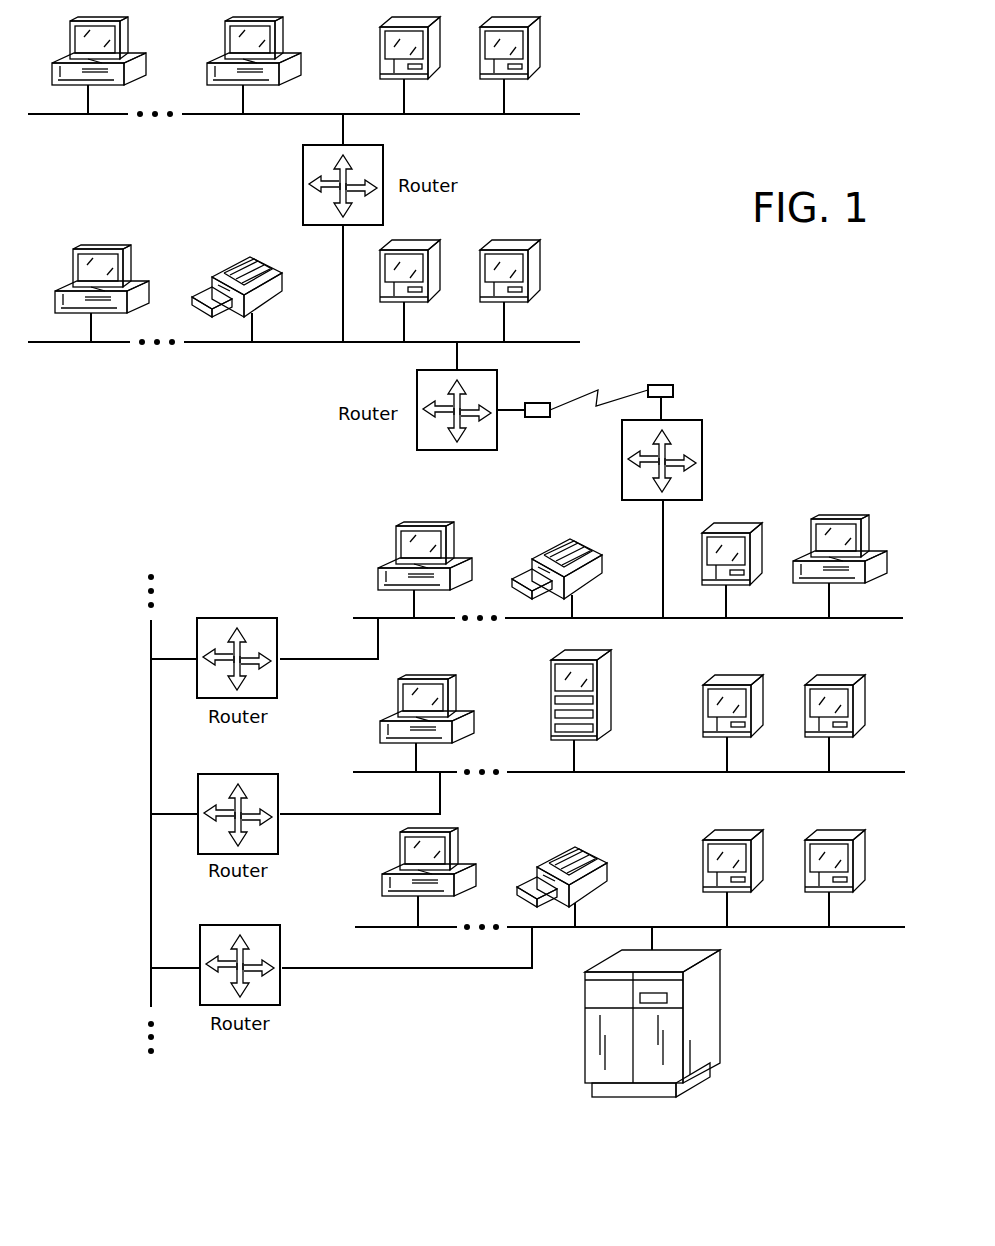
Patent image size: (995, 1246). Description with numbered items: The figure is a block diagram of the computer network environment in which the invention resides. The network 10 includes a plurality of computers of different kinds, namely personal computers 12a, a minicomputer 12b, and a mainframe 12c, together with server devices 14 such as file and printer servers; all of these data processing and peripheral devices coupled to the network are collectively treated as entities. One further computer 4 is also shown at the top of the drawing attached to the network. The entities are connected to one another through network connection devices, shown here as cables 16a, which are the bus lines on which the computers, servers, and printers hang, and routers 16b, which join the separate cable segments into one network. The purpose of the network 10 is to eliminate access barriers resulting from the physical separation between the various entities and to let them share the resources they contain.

The client computer 4 is at (62, 60).
The network 10 is at (82, 797).
The personal computer 12a is at (380, 33).
The minicomputer 12b is at (877, 549).
The mainframe 12c is at (585, 1040).
The server device 14 is at (385, 565).
The cable 16a is at (215, 116).
The router 16b is at (697, 420).